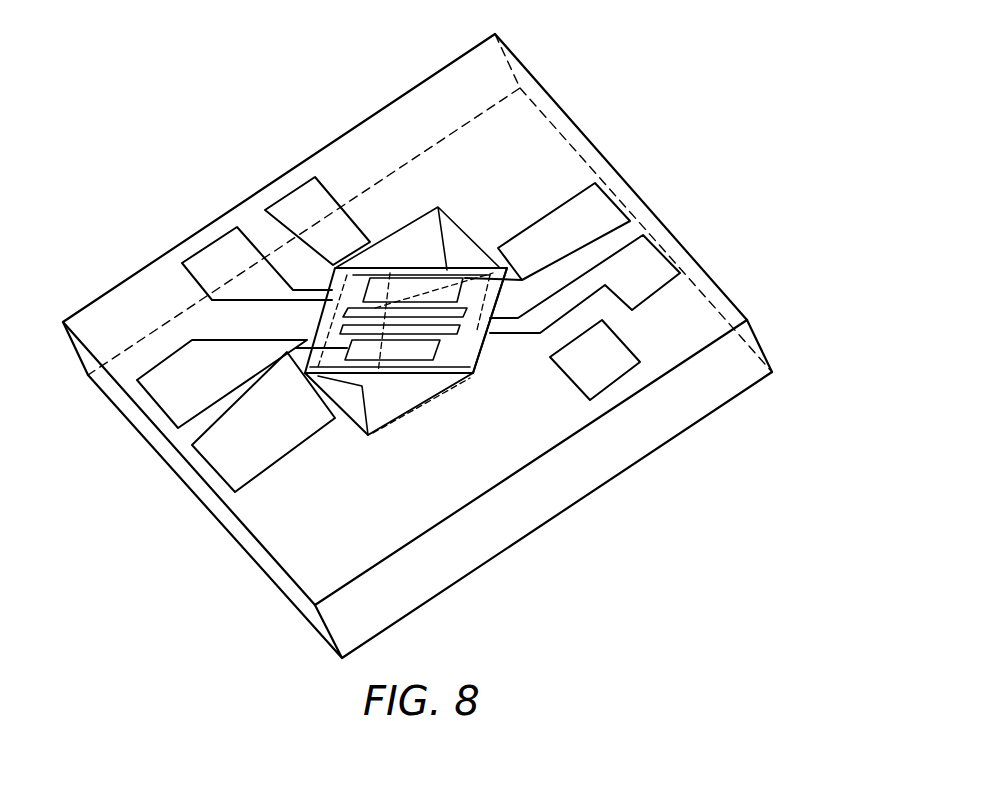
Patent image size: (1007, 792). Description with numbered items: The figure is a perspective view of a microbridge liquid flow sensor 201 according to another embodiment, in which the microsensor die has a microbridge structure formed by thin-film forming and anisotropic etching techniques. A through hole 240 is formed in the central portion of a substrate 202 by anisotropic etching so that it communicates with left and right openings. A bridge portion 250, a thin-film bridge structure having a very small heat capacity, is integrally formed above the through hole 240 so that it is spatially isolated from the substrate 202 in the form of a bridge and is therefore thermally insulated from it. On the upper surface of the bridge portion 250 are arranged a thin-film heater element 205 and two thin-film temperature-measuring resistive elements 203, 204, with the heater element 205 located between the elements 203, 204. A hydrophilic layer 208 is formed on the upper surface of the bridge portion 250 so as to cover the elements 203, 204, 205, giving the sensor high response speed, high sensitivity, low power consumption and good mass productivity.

The microbridge liquid flow sensor 201 is at (717, 80).
The substrate 202 is at (695, 392).
The thin-film temperature-measuring resistive element 203 is at (410, 350).
The thin-film temperature-measuring resistive element 204 is at (392, 290).
The thin-film heater element 205 is at (340, 311).
The hydrophilic layer 208 is at (486, 352).
The through hole 240 is at (388, 420).
The bridge portion 250 is at (390, 400).